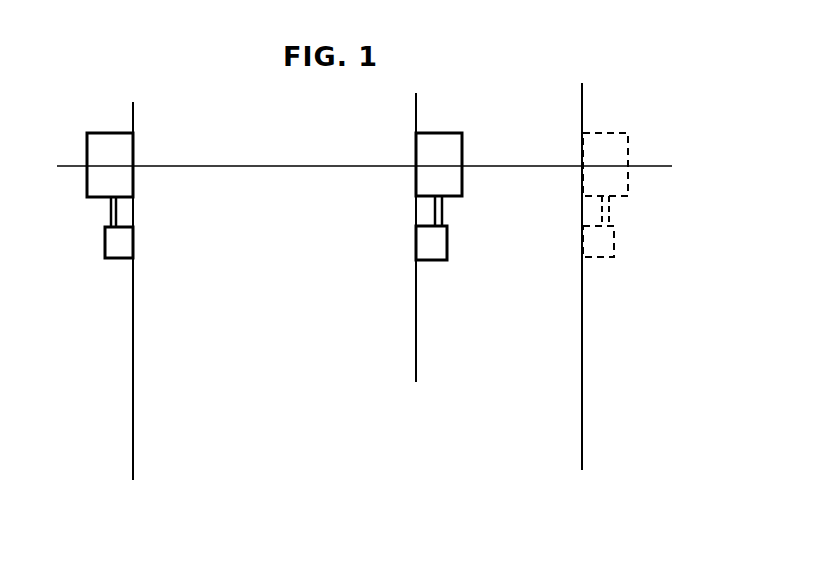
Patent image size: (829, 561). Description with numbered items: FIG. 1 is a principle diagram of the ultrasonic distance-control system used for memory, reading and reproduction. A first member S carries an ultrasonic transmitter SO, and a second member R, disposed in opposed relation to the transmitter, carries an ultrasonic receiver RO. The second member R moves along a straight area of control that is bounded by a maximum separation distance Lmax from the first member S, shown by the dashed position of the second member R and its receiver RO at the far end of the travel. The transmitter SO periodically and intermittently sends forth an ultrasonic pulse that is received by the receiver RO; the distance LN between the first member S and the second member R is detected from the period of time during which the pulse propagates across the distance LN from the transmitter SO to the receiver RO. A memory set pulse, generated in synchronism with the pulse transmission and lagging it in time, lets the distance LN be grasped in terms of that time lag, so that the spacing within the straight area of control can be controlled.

The first member S is at (95, 191).
The ultrasonic transmitter SO is at (112, 249).
The second member R is at (454, 180).
The ultrasonic receiver RO is at (441, 247).
The distance between first and second members LN is at (133, 370).
The maximum separation distance Lmax is at (582, 466).